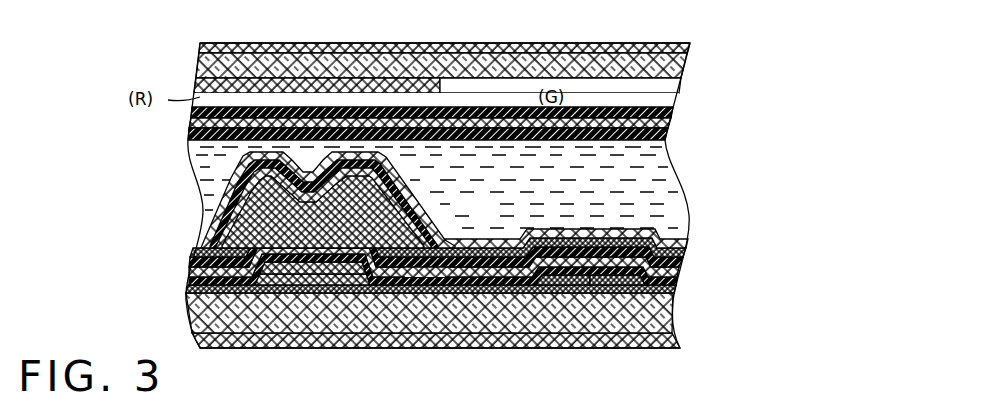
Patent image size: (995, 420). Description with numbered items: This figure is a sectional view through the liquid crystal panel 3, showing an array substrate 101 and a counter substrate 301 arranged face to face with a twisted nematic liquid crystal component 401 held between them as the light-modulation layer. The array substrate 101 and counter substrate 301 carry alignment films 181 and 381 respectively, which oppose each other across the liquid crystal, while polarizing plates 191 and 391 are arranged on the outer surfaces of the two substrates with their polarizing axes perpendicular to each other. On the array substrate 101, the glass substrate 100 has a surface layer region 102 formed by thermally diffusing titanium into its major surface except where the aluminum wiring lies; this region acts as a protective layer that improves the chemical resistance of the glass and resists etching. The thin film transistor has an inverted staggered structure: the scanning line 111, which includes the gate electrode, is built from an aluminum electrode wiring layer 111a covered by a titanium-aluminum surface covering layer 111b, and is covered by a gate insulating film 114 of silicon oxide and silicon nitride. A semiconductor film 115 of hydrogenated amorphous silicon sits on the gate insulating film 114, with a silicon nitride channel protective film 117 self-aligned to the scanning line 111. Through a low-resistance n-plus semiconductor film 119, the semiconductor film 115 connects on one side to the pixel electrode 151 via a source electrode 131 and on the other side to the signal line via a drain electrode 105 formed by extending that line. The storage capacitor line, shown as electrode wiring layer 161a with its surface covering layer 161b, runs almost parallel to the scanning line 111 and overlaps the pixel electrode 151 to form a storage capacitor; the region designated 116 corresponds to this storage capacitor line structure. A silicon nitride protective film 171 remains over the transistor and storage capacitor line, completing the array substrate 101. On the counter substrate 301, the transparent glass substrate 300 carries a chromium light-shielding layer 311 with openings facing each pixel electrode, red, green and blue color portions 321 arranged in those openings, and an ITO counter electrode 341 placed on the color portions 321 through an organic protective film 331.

The liquid crystal panel 3 is at (804, 121).
The glass substrate 100 is at (673, 310).
The array substrate 101 is at (728, 260).
The surface layer region 102 is at (190, 297).
The drain electrode 105 is at (216, 215).
The scanning line 111 is at (286, 339).
The electrode wiring layer 111a is at (270, 272).
The surface covering layer 111b is at (305, 258).
The gate insulating film 114 is at (675, 273).
The semiconductor film 115 is at (351, 266).
The storage electrode 116 is at (576, 347).
The channel protective film 117 is at (396, 190).
The low-resistance semiconductor film 119 is at (231, 178).
The source electrode 131 is at (447, 238).
The pixel electrode 151 is at (424, 266).
The electrode wiring layer 161a is at (553, 285).
The surface covering layer 161b is at (612, 285).
The protective film 171 is at (201, 252).
The alignment film 181 is at (650, 238).
The polarizing plate 191 is at (683, 347).
The transparent glass substrate 300 is at (686, 73).
The counter substrate 301 is at (712, 85).
The light-shielding layer 311 is at (312, 82).
The color portions 321 is at (476, 92).
The organic protective film 331 is at (517, 108).
The counter electrode 341 is at (672, 124).
The alignment film 381 is at (668, 136).
The polarizing plate 391 is at (690, 47).
The liquid crystal component 401 is at (672, 195).